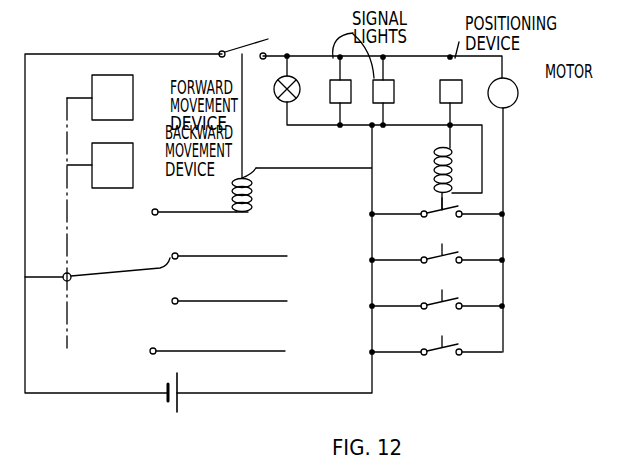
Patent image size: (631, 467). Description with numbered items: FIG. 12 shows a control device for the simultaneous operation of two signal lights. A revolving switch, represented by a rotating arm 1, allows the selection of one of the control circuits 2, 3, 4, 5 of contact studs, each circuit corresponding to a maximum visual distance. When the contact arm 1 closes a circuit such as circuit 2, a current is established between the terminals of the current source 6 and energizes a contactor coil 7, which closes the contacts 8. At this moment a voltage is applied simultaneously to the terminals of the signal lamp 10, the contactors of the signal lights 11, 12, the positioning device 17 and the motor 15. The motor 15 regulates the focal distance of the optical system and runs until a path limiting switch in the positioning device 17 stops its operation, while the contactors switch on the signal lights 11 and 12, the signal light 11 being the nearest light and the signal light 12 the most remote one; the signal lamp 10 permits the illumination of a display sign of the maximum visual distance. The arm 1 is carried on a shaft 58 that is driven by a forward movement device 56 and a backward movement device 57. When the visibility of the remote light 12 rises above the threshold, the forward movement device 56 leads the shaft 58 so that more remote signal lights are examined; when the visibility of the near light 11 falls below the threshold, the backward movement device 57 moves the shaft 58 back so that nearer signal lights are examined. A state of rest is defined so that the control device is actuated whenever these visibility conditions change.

The rotating arm 1 is at (97, 261).
The circuit 2 is at (164, 198).
The circuit 3 is at (229, 245).
The circuit 4 is at (229, 289).
The circuit 5 is at (217, 337).
The current source 6 is at (163, 396).
The contactor coil 7 is at (263, 189).
The contacts 8 is at (228, 50).
The signal lamp 10 is at (277, 97).
The signal light 11 is at (330, 91).
The signal light 12 is at (374, 91).
The motor 15 is at (512, 90).
The positioning device 17 is at (440, 91).
The forward movement device 56 is at (128, 97).
The backward movement device 57 is at (139, 148).
The shaft 58 is at (67, 187).